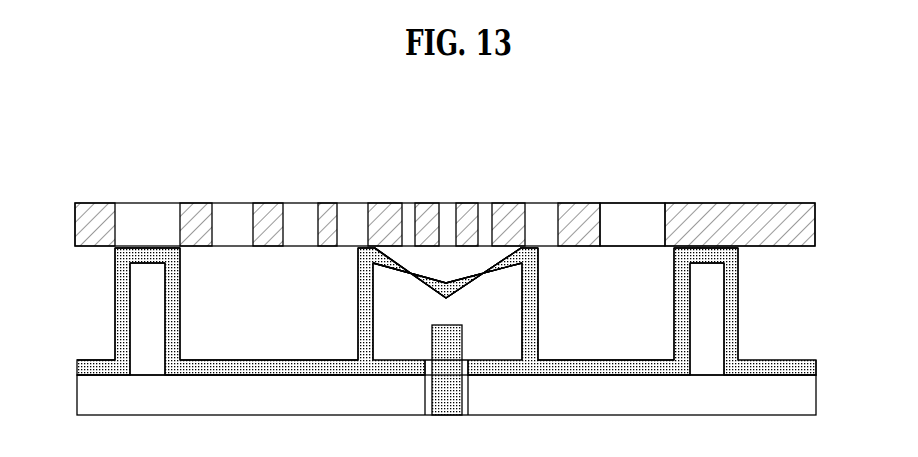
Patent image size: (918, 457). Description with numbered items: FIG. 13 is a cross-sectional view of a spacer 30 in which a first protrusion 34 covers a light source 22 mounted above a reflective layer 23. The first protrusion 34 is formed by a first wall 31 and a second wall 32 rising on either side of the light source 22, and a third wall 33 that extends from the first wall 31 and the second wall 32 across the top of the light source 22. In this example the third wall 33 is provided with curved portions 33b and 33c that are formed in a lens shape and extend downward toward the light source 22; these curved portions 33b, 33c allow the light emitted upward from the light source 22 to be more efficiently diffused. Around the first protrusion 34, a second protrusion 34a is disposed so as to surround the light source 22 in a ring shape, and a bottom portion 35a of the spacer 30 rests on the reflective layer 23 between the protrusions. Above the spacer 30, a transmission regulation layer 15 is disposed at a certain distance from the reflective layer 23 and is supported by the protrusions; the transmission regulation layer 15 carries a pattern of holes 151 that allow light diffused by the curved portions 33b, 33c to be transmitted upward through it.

The transmission regulation layer 15 is at (808, 224).
The holes 151 is at (643, 224).
The light source 22 is at (455, 352).
The reflective layer 23 is at (808, 396).
The partition wall layer 30 is at (826, 248).
The first wall 31 is at (540, 290).
The second wall 32 is at (360, 325).
The third wall 33 is at (517, 138).
The curved portion 33b is at (410, 270).
The curved portion 33c is at (478, 268).
The first protrusion 34 is at (350, 293).
The second protrusion 34a is at (105, 312).
The bottom portion 35a is at (608, 366).